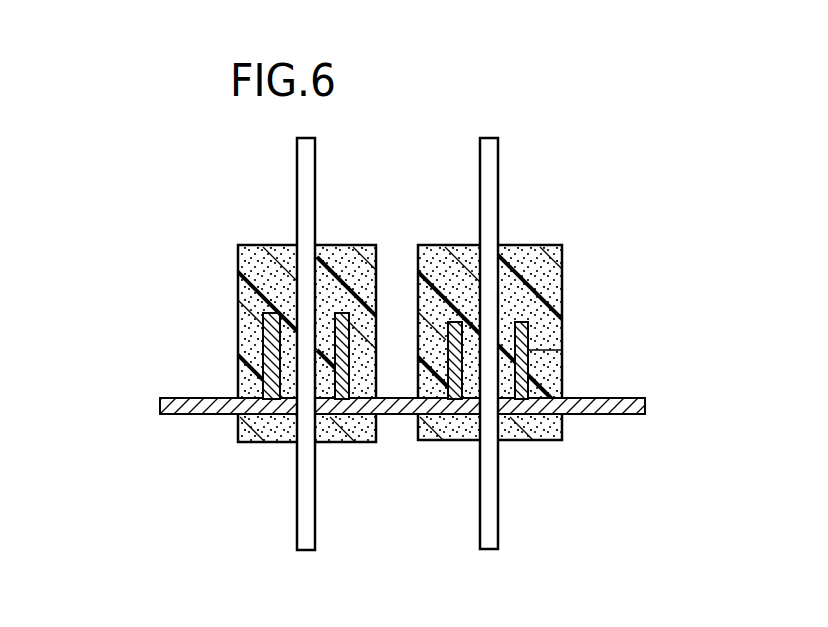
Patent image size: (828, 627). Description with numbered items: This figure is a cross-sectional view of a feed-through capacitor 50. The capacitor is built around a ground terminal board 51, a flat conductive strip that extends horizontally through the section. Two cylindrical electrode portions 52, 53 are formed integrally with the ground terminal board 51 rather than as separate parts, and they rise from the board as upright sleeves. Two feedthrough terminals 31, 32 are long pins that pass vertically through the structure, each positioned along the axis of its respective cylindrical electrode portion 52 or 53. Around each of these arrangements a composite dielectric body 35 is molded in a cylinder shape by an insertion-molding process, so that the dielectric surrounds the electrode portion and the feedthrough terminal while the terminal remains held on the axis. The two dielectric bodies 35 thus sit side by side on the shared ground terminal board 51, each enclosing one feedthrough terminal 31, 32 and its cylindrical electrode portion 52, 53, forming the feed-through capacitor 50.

The feedthrough terminal 31 is at (308, 545).
The feedthrough terminal 32 is at (490, 527).
The composite dielectric body 35 is at (275, 245).
The feed-through capacitor 50 is at (184, 450).
The ground terminal board 51 is at (160, 405).
The cylindrical electrode portion 52 is at (262, 316).
The cylindrical electrode portion 53 is at (562, 345).